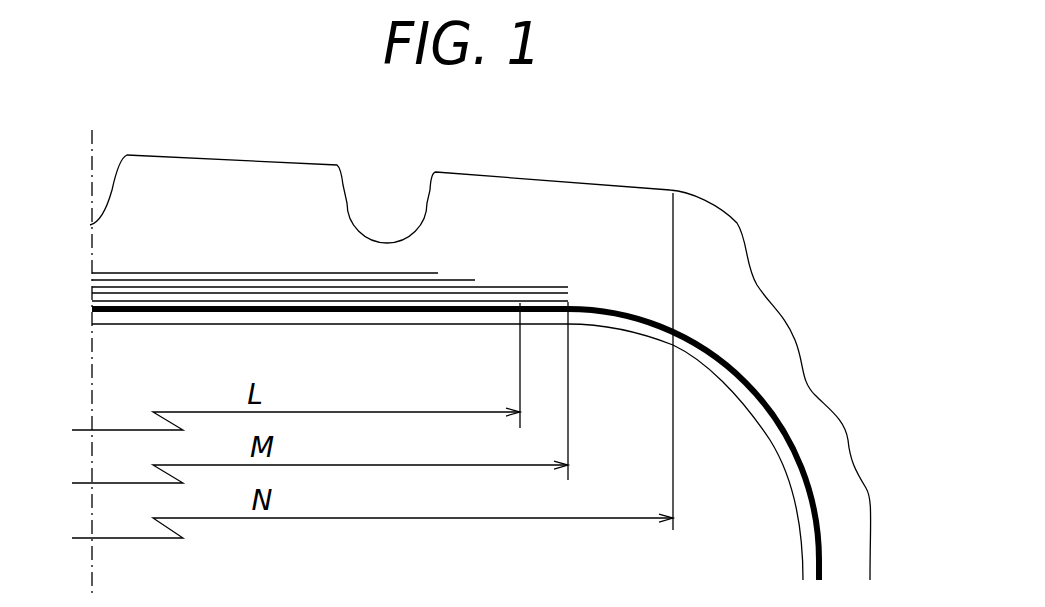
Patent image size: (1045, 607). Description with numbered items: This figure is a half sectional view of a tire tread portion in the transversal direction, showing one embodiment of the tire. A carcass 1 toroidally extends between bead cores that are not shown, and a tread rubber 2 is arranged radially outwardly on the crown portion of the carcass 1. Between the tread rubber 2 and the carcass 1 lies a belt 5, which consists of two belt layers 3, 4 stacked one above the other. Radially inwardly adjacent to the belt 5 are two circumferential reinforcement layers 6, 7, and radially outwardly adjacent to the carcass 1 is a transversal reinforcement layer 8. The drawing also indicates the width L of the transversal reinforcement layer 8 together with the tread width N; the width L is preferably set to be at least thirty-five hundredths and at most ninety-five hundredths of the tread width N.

The carcass 1 is at (783, 428).
The tread rubber 2 is at (563, 207).
The belt layer 3 is at (337, 273).
The belt layer 4 is at (272, 279).
The belt 5 is at (283, 165).
The circumferential reinforcement layer 6 is at (490, 286).
The circumferential reinforcement layer 7 is at (522, 293).
The transversal reinforcement layer 8 is at (462, 303).